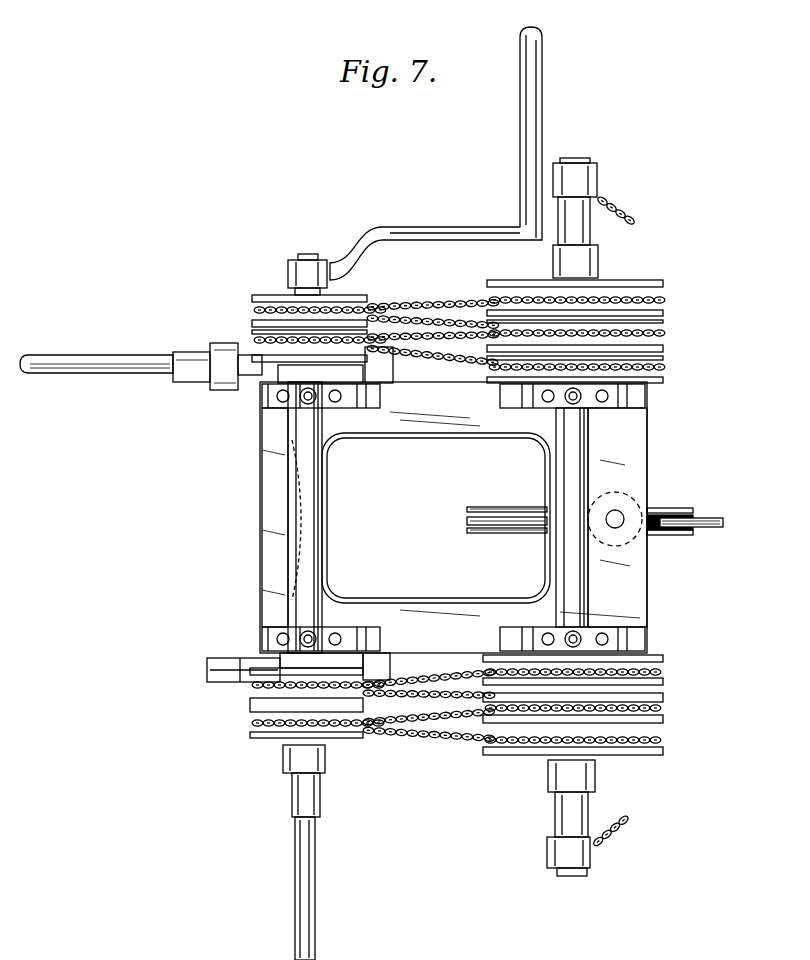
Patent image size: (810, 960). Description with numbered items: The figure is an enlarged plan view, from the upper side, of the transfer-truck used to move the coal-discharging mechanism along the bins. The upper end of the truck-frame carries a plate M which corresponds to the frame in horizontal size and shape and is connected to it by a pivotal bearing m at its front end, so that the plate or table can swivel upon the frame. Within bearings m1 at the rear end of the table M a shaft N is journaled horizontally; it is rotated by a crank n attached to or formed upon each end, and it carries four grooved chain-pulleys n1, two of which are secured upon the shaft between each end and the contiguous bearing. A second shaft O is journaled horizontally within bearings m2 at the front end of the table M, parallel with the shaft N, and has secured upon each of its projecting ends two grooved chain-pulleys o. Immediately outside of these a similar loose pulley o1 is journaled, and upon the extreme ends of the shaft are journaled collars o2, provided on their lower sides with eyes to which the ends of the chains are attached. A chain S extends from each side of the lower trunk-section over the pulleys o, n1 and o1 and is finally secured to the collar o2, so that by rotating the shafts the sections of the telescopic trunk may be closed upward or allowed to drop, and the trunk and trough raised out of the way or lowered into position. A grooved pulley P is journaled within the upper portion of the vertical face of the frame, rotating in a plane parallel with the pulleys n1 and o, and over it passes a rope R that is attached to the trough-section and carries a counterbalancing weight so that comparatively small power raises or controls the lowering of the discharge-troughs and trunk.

The plate M is at (453, 513).
The shaft N is at (322, 524).
The second shaft O is at (558, 552).
The pivotal bearing m is at (616, 516).
The bearings m1 is at (322, 594).
The bearings m2 is at (604, 408).
The crank n is at (522, 152).
The grooved chain-pulleys n1 is at (256, 299).
The grooved chain-pulleys o is at (656, 348).
The loose pulley o1 is at (642, 283).
The collars o2 is at (598, 188).
The chain S is at (424, 304).
The grooved pulley P is at (662, 508).
The rope R is at (716, 518).